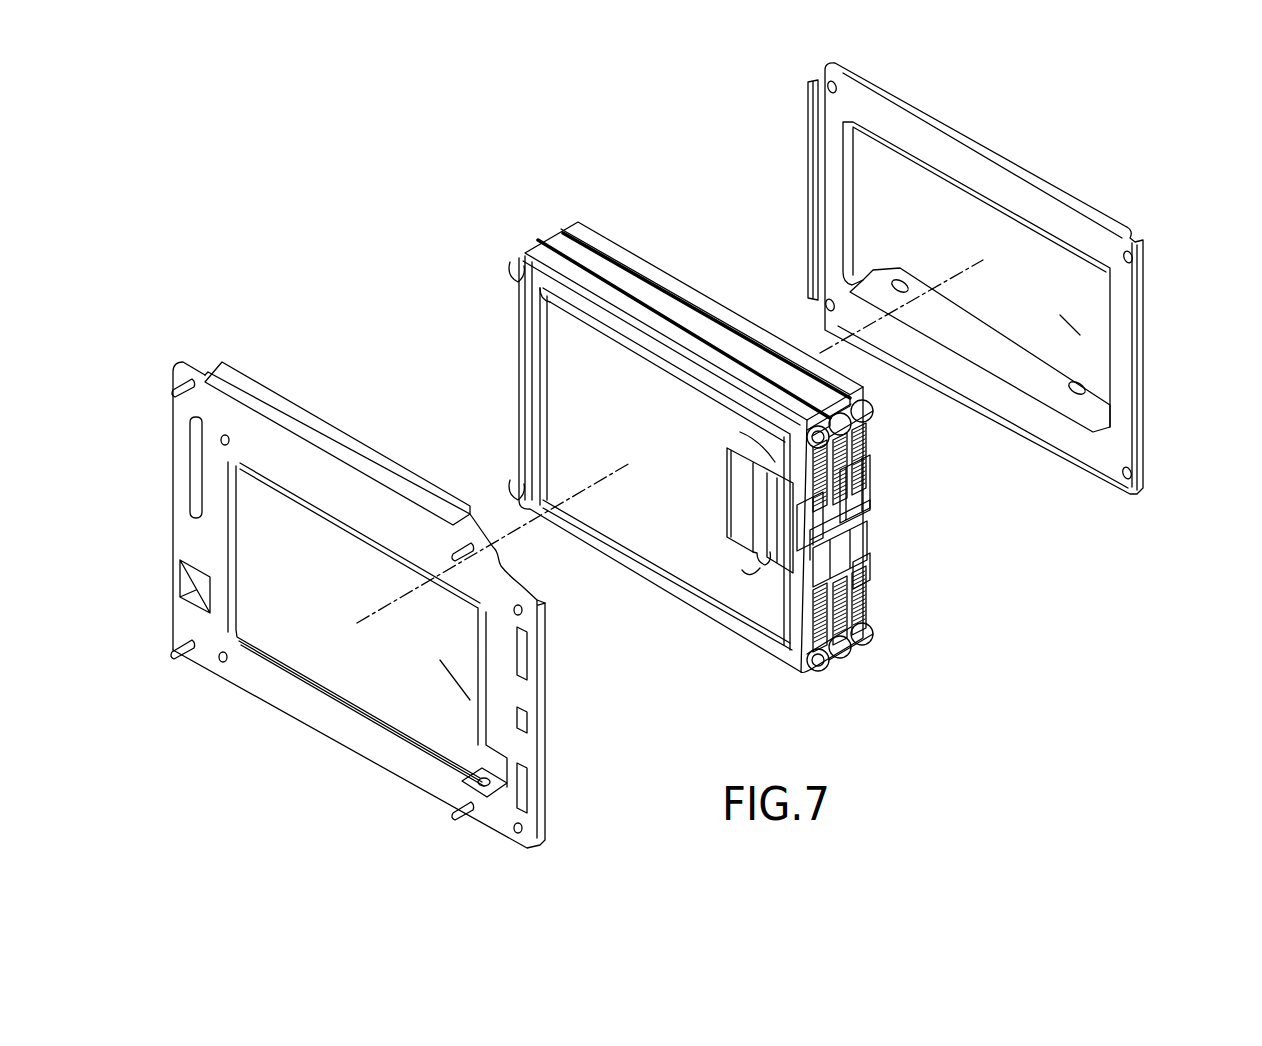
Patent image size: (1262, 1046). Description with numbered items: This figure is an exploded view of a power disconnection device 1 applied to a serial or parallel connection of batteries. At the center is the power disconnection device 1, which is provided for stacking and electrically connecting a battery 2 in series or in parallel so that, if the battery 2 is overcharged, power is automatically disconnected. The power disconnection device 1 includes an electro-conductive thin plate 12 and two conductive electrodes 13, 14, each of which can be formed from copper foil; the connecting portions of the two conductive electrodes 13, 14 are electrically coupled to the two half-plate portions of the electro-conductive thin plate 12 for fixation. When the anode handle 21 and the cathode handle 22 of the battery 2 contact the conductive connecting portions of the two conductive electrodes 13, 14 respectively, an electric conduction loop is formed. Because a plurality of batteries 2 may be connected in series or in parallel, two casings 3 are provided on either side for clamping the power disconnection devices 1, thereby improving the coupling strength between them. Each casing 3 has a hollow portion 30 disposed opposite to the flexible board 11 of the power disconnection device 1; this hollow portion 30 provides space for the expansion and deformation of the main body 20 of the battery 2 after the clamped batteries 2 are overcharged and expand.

The power disconnection device 1 is at (880, 636).
The battery 2 is at (664, 560).
The casing 3 is at (258, 378).
The flexible board 11 is at (565, 390).
The electro-conductive thin plate 12 is at (752, 560).
The conductive electrode 13 is at (870, 512).
The conductive electrode 14 is at (860, 566).
The main body 20 is at (640, 540).
The anode handle 21 is at (858, 485).
The cathode handle 22 is at (868, 545).
The hollow portion 30 is at (445, 665).